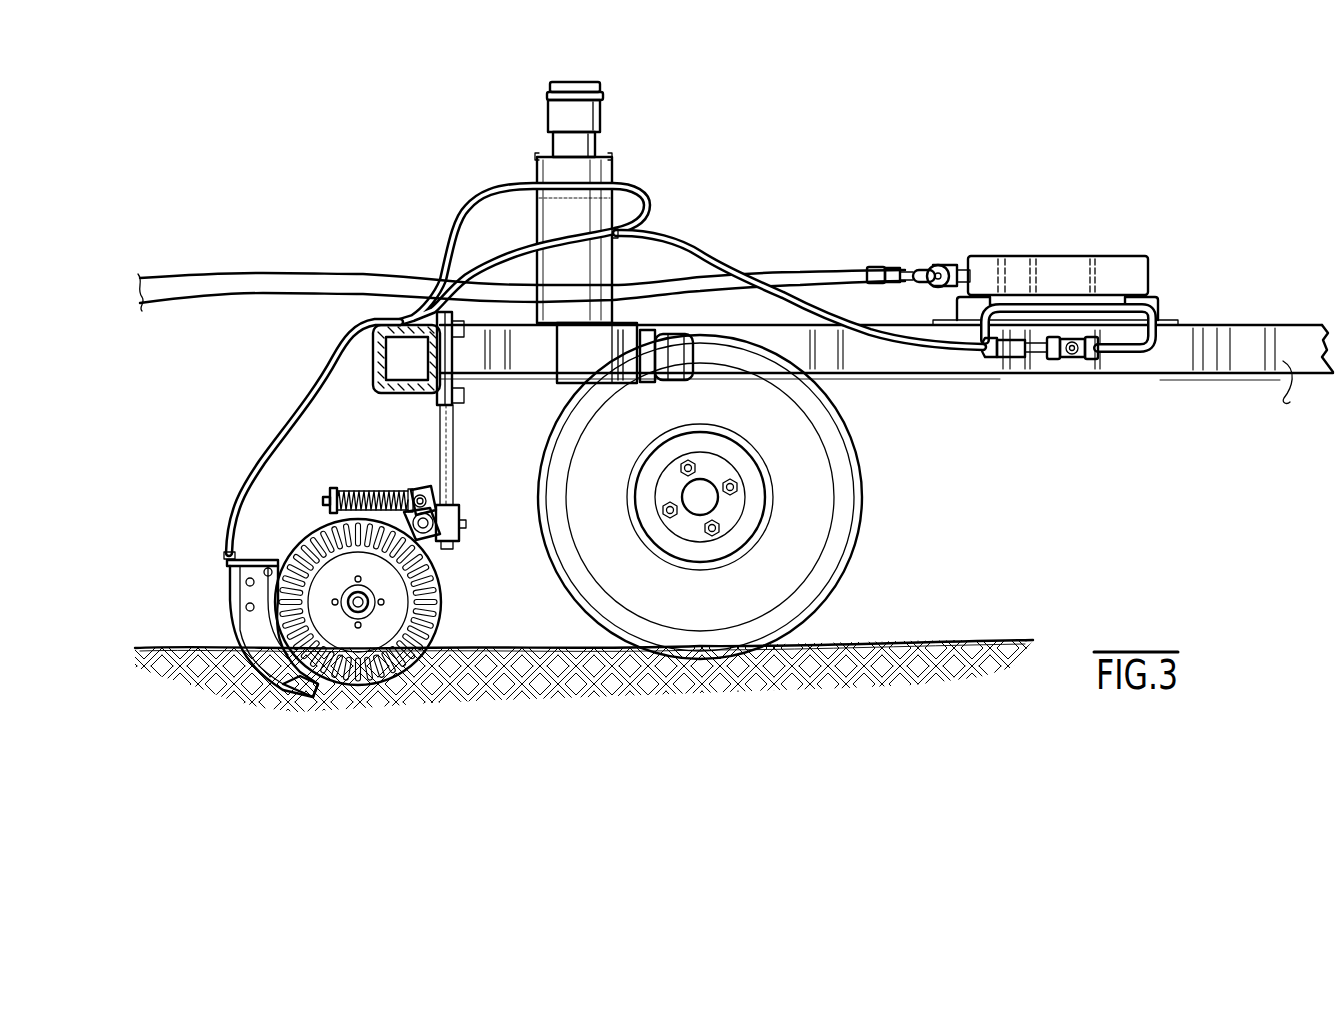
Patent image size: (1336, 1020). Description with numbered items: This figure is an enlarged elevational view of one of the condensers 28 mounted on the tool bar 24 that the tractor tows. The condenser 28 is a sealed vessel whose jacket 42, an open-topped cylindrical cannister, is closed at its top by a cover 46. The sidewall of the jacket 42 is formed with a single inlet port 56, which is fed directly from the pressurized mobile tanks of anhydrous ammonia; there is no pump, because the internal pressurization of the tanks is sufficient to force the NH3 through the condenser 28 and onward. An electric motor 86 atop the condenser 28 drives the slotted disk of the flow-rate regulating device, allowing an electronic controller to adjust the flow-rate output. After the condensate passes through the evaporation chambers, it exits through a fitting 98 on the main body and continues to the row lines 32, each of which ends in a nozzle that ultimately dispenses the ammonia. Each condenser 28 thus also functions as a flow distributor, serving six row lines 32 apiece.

The tool bar 24 is at (373, 352).
The condenser 28 is at (545, 168).
The row line 32 is at (228, 553).
The jacket 42 is at (547, 220).
The cover 46 is at (592, 152).
The inlet port 56 is at (620, 250).
The electric motor 86 is at (555, 115).
The fitting 98 is at (613, 200).